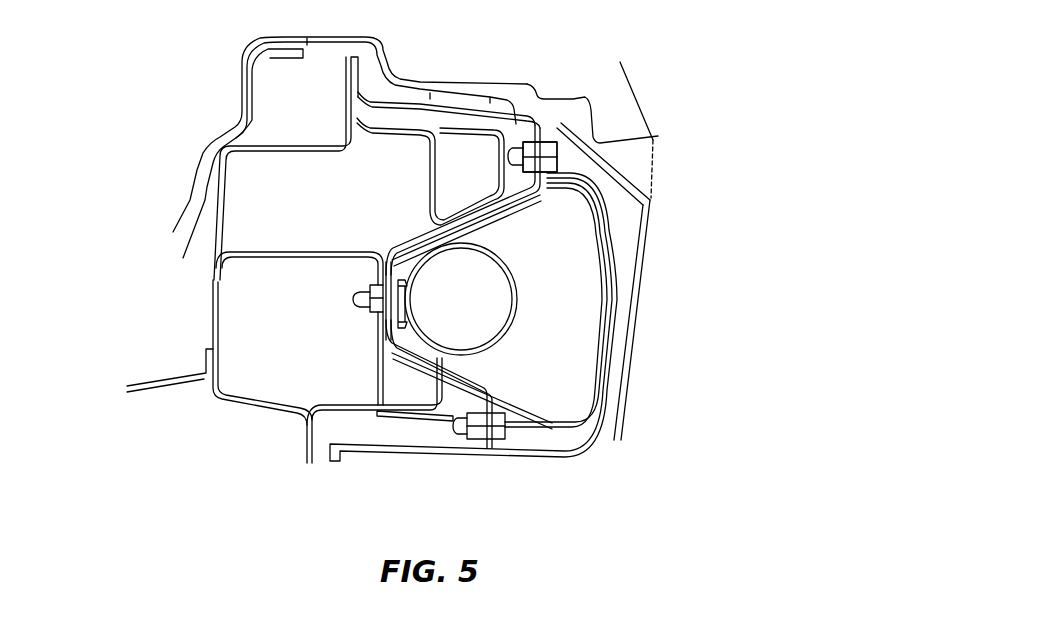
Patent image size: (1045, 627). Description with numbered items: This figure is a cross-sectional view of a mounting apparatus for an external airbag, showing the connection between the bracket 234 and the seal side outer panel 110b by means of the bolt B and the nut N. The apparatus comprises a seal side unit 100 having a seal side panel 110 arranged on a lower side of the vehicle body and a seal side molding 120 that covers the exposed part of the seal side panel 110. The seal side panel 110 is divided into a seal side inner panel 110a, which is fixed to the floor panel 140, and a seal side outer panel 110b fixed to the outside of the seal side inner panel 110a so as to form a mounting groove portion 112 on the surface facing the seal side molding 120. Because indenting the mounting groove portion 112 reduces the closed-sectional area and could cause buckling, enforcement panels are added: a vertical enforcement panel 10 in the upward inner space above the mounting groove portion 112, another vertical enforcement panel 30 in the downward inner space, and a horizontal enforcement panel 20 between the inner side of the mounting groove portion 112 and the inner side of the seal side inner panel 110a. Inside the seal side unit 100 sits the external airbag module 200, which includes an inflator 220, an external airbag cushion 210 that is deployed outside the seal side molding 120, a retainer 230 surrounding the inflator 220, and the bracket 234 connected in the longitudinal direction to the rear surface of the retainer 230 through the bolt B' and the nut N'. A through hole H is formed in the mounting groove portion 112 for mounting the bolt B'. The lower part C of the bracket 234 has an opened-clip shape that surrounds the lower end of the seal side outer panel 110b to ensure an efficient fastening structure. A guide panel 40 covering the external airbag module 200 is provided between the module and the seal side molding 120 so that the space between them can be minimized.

The vertical enforcement panel 10 is at (440, 156).
The horizontal enforcement panel 20 is at (250, 252).
The vertical enforcement panel 30 is at (392, 418).
The guide panel 40 is at (608, 217).
The seal side unit 100 is at (216, 434).
The seal side panel 110 is at (415, 357).
The seal side inner panel 110a is at (272, 417).
The seal side outer panel 110b is at (364, 408).
The mounting groove portion 112 is at (383, 253).
The seal side molding 120 is at (633, 348).
The floor panel 140 is at (155, 392).
The external airbag module 200 is at (560, 283).
The external airbag cushion 210 is at (610, 245).
The inflator 220 is at (516, 338).
The retainer 230 is at (515, 289).
The bracket 234 is at (548, 152).
The nut N is at (541, 104).
The nut N' is at (310, 368).
The bolt B is at (640, 130).
The bolt B' is at (265, 325).
The through hole H is at (358, 282).
The lower part of the bracket C is at (421, 405).